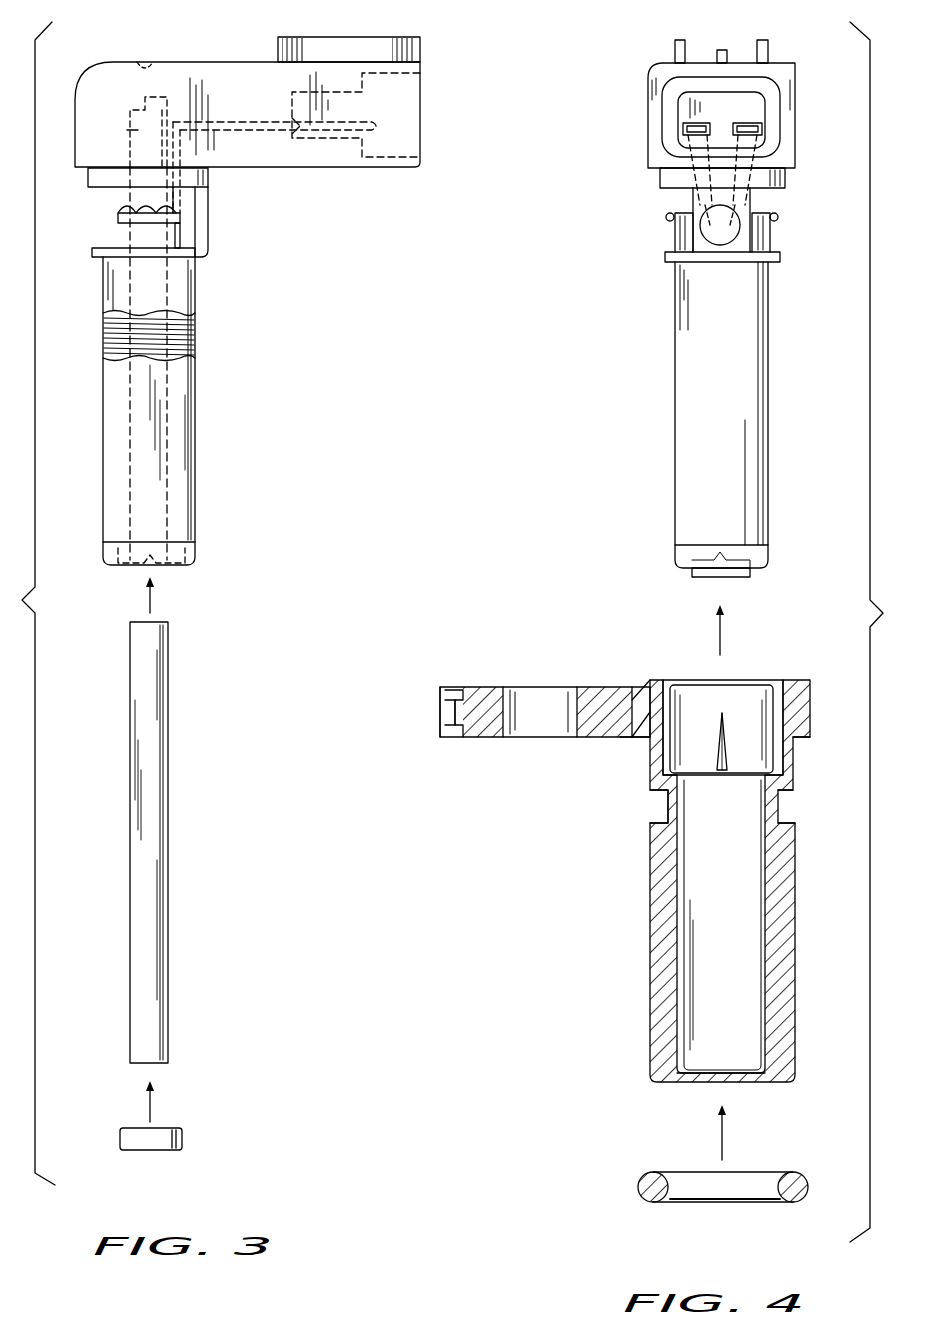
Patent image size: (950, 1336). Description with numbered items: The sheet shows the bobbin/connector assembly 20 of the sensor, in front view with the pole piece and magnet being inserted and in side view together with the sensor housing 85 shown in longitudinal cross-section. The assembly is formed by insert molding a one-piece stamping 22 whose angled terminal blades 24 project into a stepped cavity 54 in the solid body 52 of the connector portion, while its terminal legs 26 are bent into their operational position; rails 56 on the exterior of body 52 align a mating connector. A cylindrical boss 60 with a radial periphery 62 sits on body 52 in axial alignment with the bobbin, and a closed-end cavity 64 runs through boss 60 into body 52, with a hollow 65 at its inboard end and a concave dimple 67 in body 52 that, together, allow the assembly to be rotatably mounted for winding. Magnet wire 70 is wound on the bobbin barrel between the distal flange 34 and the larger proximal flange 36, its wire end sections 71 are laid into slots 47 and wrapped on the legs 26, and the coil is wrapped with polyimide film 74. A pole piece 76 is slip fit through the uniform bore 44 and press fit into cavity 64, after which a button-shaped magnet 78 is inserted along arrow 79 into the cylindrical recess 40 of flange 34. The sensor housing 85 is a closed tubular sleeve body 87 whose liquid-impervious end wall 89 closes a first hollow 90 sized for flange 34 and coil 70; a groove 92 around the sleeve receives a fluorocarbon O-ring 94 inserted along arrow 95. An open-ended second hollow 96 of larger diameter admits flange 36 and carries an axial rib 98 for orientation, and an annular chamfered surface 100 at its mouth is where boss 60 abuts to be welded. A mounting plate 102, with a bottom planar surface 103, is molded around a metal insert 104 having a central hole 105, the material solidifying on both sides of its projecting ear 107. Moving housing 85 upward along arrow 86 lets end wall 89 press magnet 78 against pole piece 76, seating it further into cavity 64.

In FIG. 3, the bobbin/connector assembly 20 is at (262, 590).
In FIG. 4, the bobbin/connector assembly 20 is at (717, 347).
In FIG. 3, the one-piece stamping 22 is at (214, 104).
In FIG. 3, the terminal blades 24 is at (253, 128).
In FIG. 4, the terminal blades 24 is at (760, 150).
In FIG. 3, the terminal legs 26 is at (125, 225).
In FIG. 3, the distal flange 34 is at (196, 556).
In FIG. 4, the distal flange 34 is at (685, 556).
In FIG. 3, the proximal flange 36 is at (95, 257).
In FIG. 4, the proximal flange 36 is at (667, 258).
In FIG. 3, the cylindrical recess 40 is at (125, 568).
In FIG. 3, the bore 44 is at (163, 505).
In FIG. 3, the wire slots 47 is at (203, 245).
In FIG. 3, the body 52 is at (118, 68).
In FIG. 4, the body 52 is at (625, 172).
In FIG. 3, the stepped cavity 54 is at (418, 92).
In FIG. 3, the rails 56 is at (335, 48).
In FIG. 3, the cylindrical boss 60 is at (210, 187).
In FIG. 4, the cylindrical boss 60 is at (695, 195).
In FIG. 3, the radial periphery 62 is at (92, 180).
In FIG. 4, the radial periphery 62 is at (785, 182).
In FIG. 3, the closed-end cavity 64 is at (127, 130).
In FIG. 3, the hollow 65 is at (160, 97).
In FIG. 3, the concave dimple 67 is at (143, 62).
In FIG. 3, the magnet wire 70 is at (180, 340).
In FIG. 4, the magnet wire 70 is at (745, 418).
In FIG. 3, the wire end sections 71 is at (128, 213).
In FIG. 3, the polyimide film 74 is at (185, 428).
In FIG. 4, the polyimide film 74 is at (697, 430).
In FIG. 3, the pole piece 76 is at (170, 912).
In FIG. 3, the magnet 78 is at (170, 1150).
In FIG. 4, the magnet 78 is at (725, 577).
In FIG. 3, the arrow 79 is at (152, 1108).
In FIG. 4, the sensor housing 85 is at (638, 912).
In FIG. 4, the arrow 86 is at (722, 640).
In FIG. 4, the sleeve body 87 is at (785, 930).
In FIG. 4, the end wall 89 is at (713, 1082).
In FIG. 4, the first interior cylindrical hollow 90 is at (740, 1050).
In FIG. 4, the groove 92 is at (655, 812).
In FIG. 4, the O-ring 94 is at (640, 1192).
In FIG. 4, the arrow 95 is at (724, 1140).
In FIG. 4, the second hollow 96 is at (752, 756).
In FIG. 4, the rib 98 is at (725, 728).
In FIG. 4, the annular chamfered surface 100 is at (690, 680).
In FIG. 4, the mounting plate 102 is at (638, 700).
In FIG. 4, the planar surface 103 is at (812, 740).
In FIG. 4, the mounting insert 104 is at (488, 700).
In FIG. 4, the central hole 105 is at (537, 700).
In FIG. 4, the ear 107 is at (458, 712).